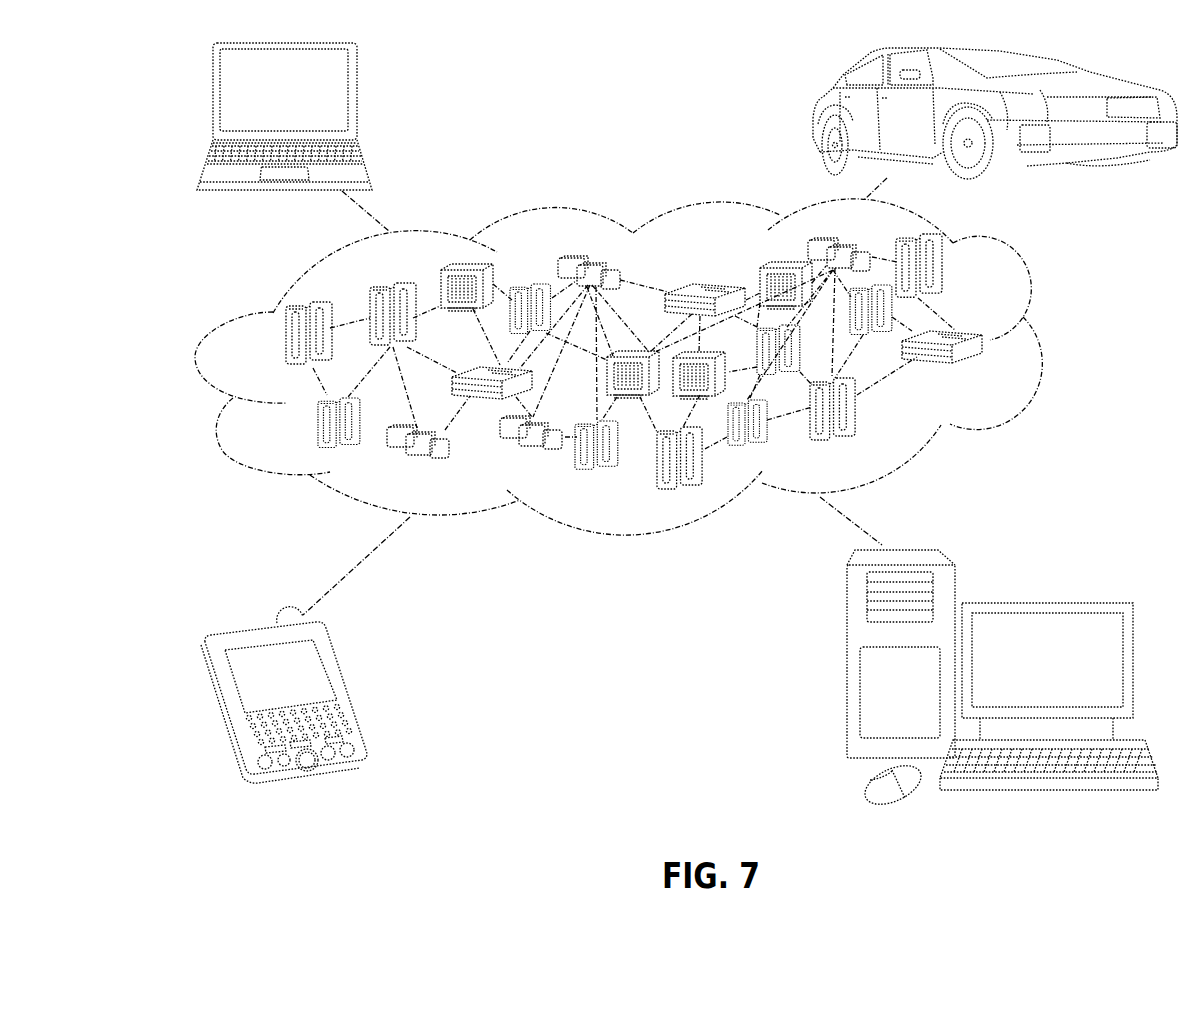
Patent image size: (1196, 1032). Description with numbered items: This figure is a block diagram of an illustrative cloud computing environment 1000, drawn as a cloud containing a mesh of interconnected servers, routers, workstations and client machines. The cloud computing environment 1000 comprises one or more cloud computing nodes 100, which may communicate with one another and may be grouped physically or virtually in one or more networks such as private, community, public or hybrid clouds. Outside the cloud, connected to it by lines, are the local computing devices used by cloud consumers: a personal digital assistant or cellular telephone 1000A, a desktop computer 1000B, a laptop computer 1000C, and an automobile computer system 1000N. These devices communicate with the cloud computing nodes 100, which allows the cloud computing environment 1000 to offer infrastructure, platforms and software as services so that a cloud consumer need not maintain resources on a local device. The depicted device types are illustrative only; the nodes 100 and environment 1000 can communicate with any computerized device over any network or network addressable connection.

The cloud computing environment 1000 is at (1045, 342).
The cloud computing nodes 100 is at (998, 372).
The personal digital assistant (PDA) or cellular telephone 1000A is at (345, 688).
The desktop computer 1000B is at (1055, 586).
The laptop computer 1000C is at (356, 99).
The automobile computer system 1000N is at (815, 113).